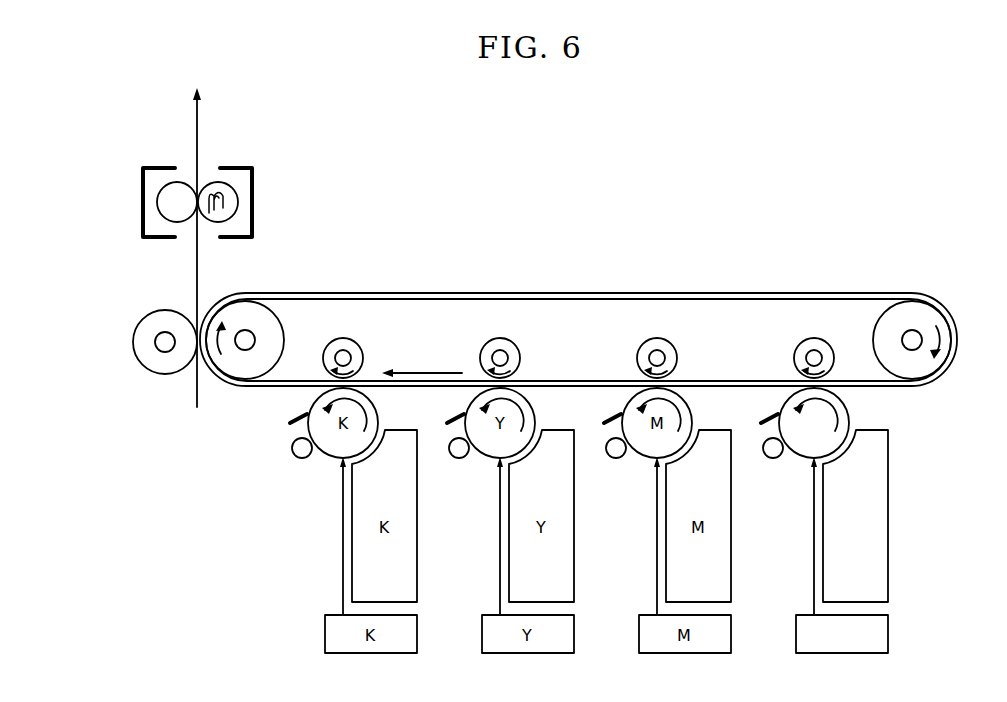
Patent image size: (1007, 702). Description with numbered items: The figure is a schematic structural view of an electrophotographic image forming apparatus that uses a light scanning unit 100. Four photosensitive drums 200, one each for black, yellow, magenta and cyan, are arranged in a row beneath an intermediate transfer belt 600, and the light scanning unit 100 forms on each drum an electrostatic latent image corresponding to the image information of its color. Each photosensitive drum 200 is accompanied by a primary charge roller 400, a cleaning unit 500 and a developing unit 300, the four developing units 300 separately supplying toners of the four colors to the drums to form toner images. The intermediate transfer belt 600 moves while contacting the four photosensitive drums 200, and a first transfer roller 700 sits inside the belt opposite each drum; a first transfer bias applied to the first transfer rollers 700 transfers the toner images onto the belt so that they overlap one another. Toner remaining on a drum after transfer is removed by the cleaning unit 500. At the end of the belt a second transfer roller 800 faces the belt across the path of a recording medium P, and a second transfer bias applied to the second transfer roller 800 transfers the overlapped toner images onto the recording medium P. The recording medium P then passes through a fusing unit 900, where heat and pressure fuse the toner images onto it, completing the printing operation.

The light scanning unit 100 is at (872, 555).
The photosensitive drum 200 is at (866, 423).
The developing unit 300 is at (880, 516).
The primary charge roller 400 is at (773, 472).
The cleaning unit 500 is at (744, 412).
The intermediate transfer belt 600 is at (580, 297).
The first transfer roller 700 is at (814, 311).
The second transfer roller 800 is at (133, 342).
The fusing unit 900 is at (126, 211).
The recording medium P is at (197, 266).